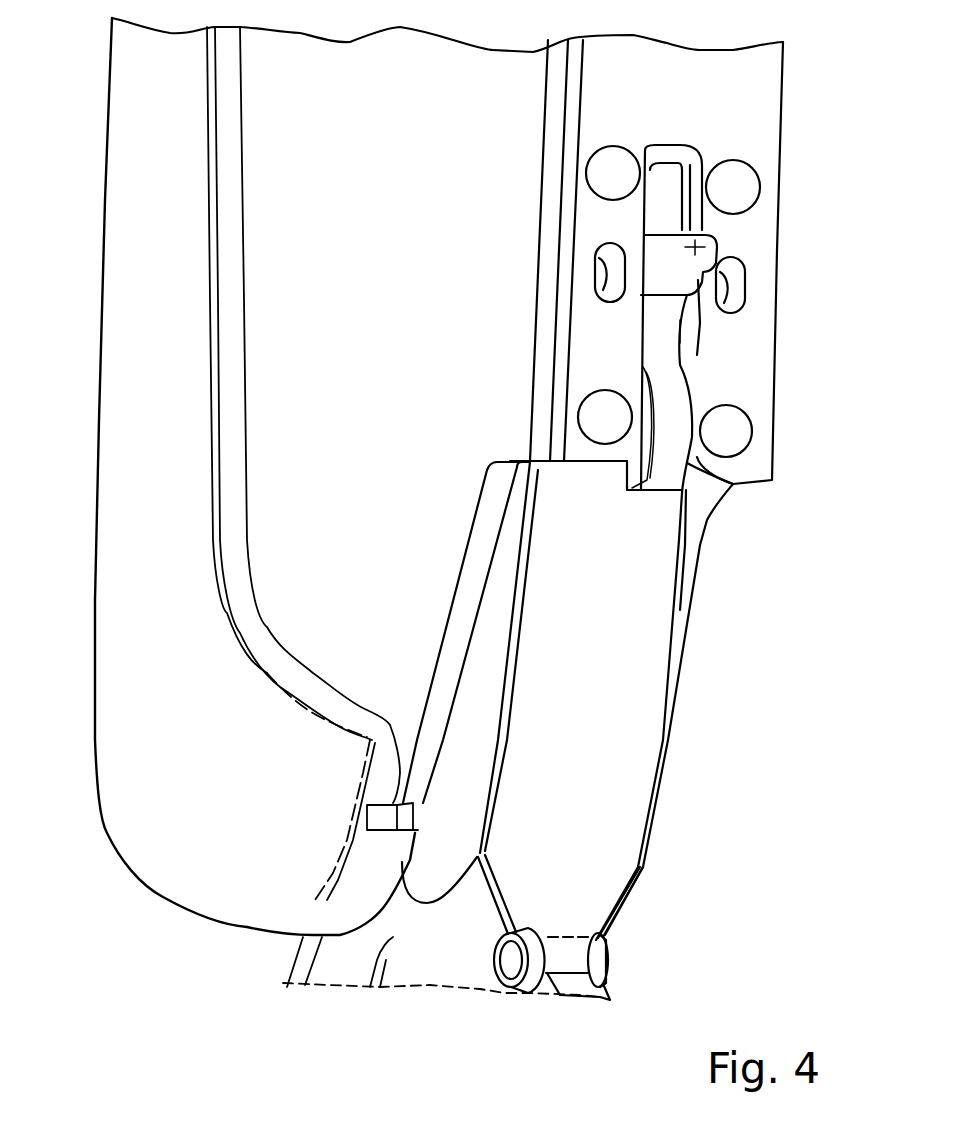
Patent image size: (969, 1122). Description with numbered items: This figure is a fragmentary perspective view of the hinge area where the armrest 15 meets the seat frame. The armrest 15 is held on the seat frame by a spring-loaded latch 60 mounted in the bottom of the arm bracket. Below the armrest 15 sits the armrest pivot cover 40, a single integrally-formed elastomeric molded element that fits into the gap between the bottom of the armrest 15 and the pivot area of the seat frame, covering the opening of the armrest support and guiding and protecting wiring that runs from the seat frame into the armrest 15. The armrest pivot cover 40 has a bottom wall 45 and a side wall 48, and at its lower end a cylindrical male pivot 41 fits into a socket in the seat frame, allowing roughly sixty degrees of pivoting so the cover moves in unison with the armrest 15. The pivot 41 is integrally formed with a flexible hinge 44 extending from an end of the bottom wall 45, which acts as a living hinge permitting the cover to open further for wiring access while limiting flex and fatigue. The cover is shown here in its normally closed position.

The armrest 15 is at (142, 490).
The spring-loaded latch 60 is at (650, 290).
The bottom wall 45 is at (663, 587).
The armrest pivot cover 40 is at (673, 741).
The side wall 48 is at (467, 806).
The flexible hinge 44 is at (527, 899).
The cylindrical male pivot 41 is at (613, 962).